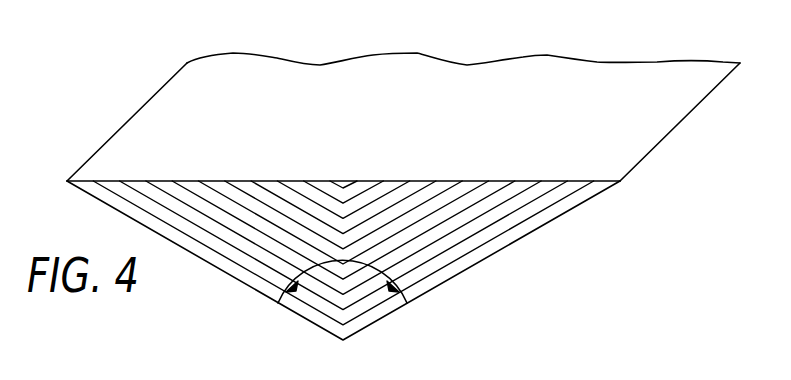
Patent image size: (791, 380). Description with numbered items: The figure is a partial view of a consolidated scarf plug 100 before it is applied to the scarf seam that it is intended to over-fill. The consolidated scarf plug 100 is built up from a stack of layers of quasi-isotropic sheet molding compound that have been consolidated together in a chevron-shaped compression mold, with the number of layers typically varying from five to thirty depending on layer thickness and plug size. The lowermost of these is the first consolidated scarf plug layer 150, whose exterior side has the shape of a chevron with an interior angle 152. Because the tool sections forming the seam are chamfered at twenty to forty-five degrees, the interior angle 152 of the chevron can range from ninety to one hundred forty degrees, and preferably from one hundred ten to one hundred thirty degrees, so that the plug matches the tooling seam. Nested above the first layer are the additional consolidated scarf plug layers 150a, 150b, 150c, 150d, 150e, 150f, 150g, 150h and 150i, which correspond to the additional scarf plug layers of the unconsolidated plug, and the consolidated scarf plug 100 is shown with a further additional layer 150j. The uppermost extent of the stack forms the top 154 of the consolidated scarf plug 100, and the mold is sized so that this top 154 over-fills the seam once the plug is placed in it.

The consolidated scarf plug 100 is at (668, 135).
The first consolidated scarf plug layer 150 is at (560, 208).
The interior angle 152 is at (343, 265).
The top of the consolidated scarf plug 154 is at (635, 84).
The additional consolidated scarf plug layer 150a is at (115, 186).
The additional consolidated scarf plug layer 150b is at (547, 184).
The additional consolidated scarf plug layer 150c is at (163, 185).
The additional consolidated scarf plug layer 150d is at (488, 186).
The additional consolidated scarf plug layer 150e is at (217, 186).
The additional consolidated scarf plug layer 150f is at (438, 186).
The additional consolidated scarf plug layer 150g is at (268, 186).
The additional consolidated scarf plug layer 150h is at (393, 184).
The additional consolidated scarf plug layer 150i is at (365, 186).
The additional layer 150j is at (342, 183).